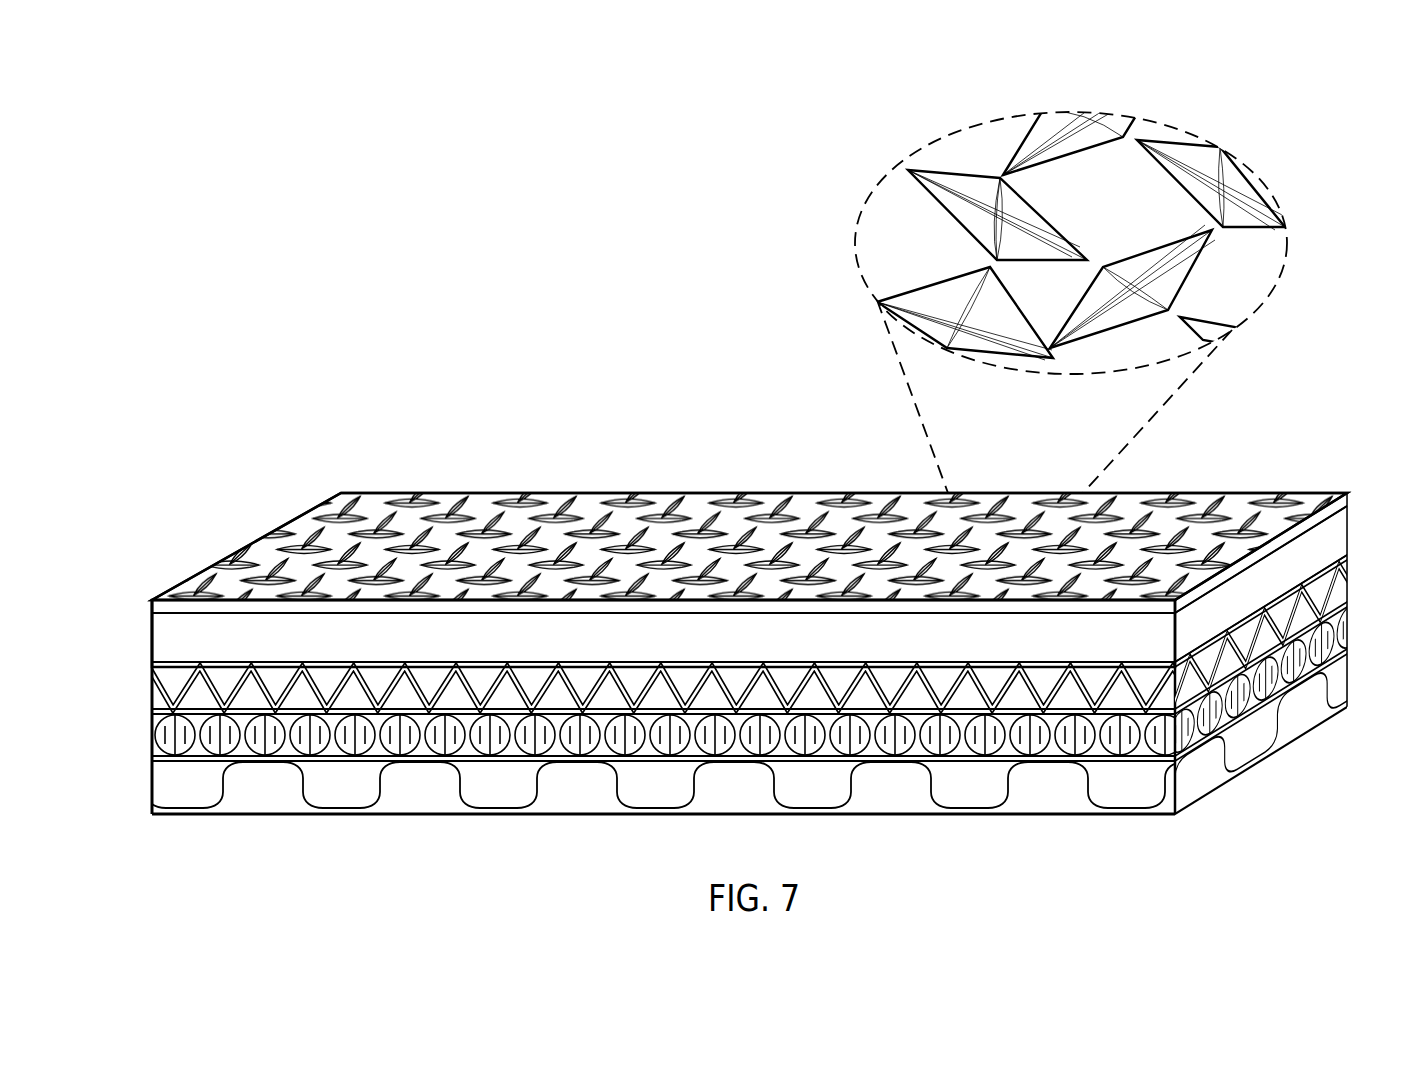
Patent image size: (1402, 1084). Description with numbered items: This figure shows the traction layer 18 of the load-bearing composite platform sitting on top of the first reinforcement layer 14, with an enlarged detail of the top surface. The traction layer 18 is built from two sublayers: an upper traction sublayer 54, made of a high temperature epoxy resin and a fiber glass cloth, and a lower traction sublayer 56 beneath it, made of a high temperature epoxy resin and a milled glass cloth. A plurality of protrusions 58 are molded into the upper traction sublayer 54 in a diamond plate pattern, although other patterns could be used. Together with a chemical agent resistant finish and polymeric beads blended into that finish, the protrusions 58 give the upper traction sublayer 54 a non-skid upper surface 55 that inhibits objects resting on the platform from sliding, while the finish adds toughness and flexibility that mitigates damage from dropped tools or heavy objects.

The first reinforcement layer 14 is at (140, 668).
The traction layer 18 is at (142, 602).
The upper traction sublayer 54 is at (1353, 488).
The lower traction sublayer 56 is at (1353, 510).
The non-skid upper surface 55 is at (573, 507).
The protrusions 58 is at (808, 500).